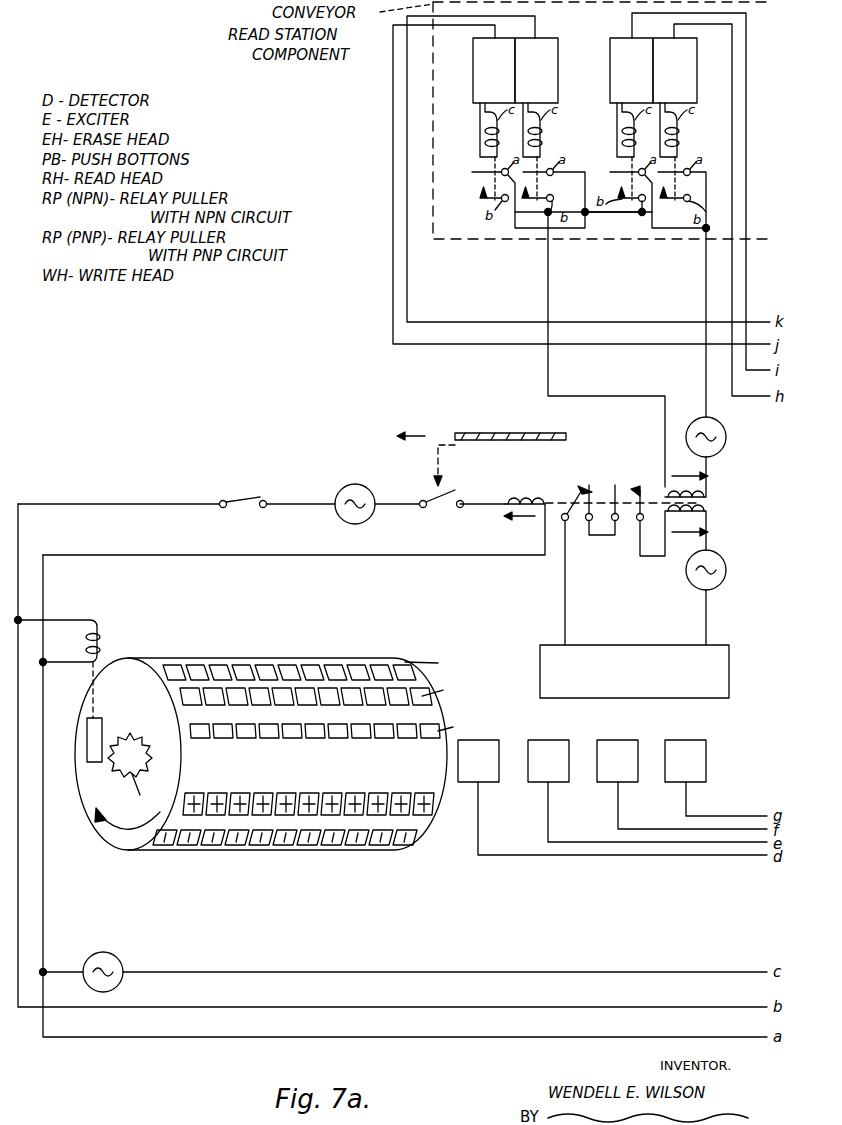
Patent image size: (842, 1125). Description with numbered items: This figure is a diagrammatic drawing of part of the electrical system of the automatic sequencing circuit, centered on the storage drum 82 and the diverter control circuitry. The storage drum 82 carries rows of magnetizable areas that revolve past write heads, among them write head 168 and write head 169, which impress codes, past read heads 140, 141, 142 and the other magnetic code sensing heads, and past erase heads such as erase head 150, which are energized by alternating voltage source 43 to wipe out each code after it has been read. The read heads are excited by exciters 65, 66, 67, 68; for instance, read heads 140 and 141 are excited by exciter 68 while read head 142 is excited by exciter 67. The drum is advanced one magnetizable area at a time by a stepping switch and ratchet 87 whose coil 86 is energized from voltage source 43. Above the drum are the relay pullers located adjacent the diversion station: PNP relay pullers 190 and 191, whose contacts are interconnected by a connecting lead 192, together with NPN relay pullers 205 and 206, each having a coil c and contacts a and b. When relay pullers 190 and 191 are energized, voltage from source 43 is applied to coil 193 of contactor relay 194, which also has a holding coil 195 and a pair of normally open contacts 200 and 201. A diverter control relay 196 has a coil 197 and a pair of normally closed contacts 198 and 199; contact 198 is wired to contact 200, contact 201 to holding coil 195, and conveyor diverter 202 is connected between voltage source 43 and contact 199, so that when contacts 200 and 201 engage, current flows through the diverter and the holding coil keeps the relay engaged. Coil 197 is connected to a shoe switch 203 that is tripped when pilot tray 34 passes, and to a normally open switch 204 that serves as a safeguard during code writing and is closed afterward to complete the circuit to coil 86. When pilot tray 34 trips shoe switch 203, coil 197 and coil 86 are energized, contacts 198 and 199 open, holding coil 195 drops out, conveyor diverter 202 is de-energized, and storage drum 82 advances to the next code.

The pilot tray 34 is at (458, 433).
The alternating voltage source 43 is at (718, 428).
The exciter 65 is at (485, 738).
The exciter 66 is at (553, 738).
The exciter 67 is at (622, 738).
The exciter 68 is at (690, 738).
The storage drum 82 is at (450, 709).
The stepping switch coil 86 is at (100, 628).
The stepping switch and ratchet 87 is at (123, 773).
The read head 140 is at (172, 665).
The read head 141 is at (203, 668).
The read head 142 is at (226, 670).
The erase head 150 is at (180, 696).
The write head 168 is at (232, 740).
The write head 169 is at (191, 731).
The PNP relay puller 190 is at (558, 50).
The PNP relay puller 191 is at (697, 60).
The connecting lead 192 is at (600, 214).
The coil 193 is at (712, 495).
The contactor relay 194 is at (778, 516).
The holding coil 195 is at (700, 518).
The diverter control relay 196 is at (628, 471).
The diverter control relay coil 197 is at (512, 500).
The relay contact 198 is at (589, 521).
The relay contact 199 is at (569, 522).
The relay contact 200 is at (617, 521).
The relay contact 201 is at (640, 521).
The conveyor diverter 202 is at (729, 678).
The shoe switch 203 is at (448, 496).
The switch 204 is at (245, 506).
The NPN relay puller 205 is at (610, 82).
The NPN relay puller 206 is at (473, 55).